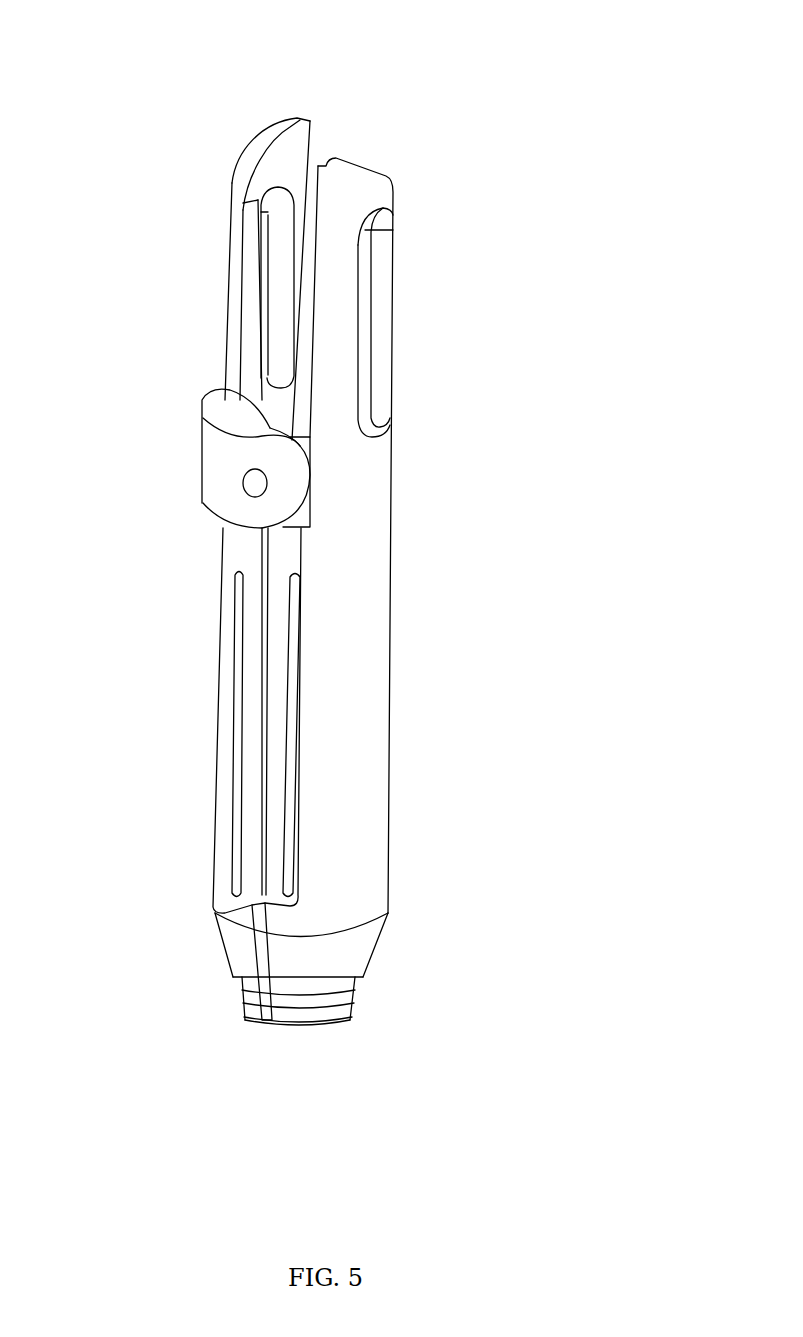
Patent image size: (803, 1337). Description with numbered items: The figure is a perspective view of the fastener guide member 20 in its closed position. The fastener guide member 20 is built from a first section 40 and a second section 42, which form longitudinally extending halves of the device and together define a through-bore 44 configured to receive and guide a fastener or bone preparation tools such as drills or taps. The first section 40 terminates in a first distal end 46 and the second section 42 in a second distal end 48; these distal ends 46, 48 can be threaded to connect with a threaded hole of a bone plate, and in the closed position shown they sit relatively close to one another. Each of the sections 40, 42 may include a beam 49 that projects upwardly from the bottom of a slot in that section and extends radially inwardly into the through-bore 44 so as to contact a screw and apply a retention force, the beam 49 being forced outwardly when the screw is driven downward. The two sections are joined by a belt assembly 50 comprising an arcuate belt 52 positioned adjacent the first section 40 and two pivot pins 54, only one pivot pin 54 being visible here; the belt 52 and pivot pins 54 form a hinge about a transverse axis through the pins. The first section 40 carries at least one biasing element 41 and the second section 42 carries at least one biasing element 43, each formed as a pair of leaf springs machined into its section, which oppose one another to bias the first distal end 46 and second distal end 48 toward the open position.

The fastener guide member 20 is at (568, 63).
The first section 40 is at (219, 263).
The biasing element 41 is at (281, 720).
The second section 42 is at (377, 631).
The biasing element 43 is at (273, 850).
The through-bore 44 is at (280, 172).
The first distal end 46 is at (242, 958).
The second distal end 48 is at (343, 960).
The beam 49 is at (263, 257).
The belt assembly 50 is at (259, 479).
The belt 52 is at (227, 457).
The pivot pin 54 is at (255, 483).